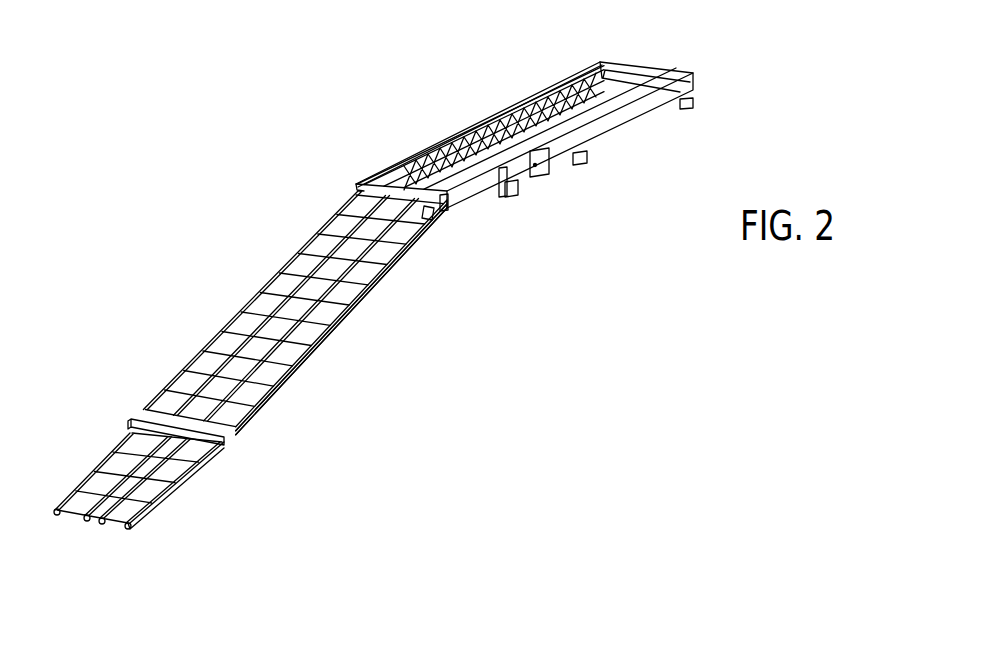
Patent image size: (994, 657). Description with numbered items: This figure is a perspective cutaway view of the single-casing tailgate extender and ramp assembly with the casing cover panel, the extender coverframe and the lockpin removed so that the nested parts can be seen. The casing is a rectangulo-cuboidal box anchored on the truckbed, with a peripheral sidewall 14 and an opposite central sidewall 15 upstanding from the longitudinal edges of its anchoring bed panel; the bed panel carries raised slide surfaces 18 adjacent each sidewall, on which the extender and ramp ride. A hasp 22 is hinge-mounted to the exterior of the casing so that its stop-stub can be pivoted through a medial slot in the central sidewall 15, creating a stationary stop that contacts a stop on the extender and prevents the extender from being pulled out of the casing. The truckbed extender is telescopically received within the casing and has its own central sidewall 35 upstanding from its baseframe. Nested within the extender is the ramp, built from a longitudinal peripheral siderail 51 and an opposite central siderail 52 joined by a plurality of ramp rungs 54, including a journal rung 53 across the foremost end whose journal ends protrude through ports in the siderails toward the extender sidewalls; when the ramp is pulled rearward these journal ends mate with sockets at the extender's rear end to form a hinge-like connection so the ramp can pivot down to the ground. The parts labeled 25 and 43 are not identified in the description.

The peripheral sidewall 14 is at (573, 83).
The central sidewall 15 is at (603, 130).
The raised slide surfaces 18 is at (602, 90).
The hasp 22 is at (537, 165).
The bracket 25 is at (510, 178).
The central sidewall 35 is at (475, 190).
The hinge lug 43 is at (452, 202).
The peripheral siderail 51 is at (228, 330).
The central siderail 52 is at (312, 345).
The journal rung 53 is at (428, 212).
The ramp rungs 54 is at (355, 297).